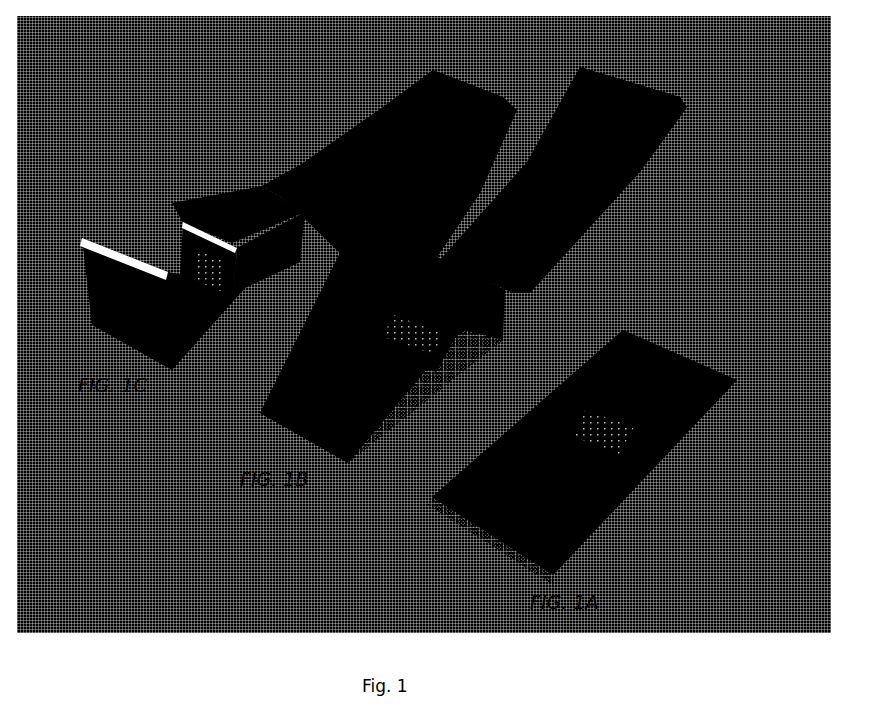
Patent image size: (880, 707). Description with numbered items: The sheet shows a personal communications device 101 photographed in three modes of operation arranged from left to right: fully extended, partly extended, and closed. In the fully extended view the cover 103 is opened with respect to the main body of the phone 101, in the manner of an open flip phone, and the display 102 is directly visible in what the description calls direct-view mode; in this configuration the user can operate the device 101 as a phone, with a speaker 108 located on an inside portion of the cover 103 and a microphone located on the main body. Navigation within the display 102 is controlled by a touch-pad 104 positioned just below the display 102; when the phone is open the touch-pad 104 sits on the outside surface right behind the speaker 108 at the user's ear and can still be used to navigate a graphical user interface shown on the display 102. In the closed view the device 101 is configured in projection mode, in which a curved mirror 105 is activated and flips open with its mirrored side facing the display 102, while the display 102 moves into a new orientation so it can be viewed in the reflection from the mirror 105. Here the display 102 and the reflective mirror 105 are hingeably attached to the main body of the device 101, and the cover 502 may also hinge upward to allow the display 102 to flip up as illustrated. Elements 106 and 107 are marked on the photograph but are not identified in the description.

In FIG. 1C, the personal communications device 101 is at (298, 160).
In FIG. 1B, the personal communications device 101 is at (388, 266).
In FIG. 1A, the personal communications device 101 is at (645, 173).
In FIG. 1C, the display 102 is at (172, 240).
In FIG. 1B, the display 102 is at (385, 303).
In FIG. 1A, the display 102 is at (575, 362).
In FIG. 1B, the cover 103 is at (480, 88).
In FIG. 1A, the cover 103 is at (672, 95).
In FIG. 1B, the touch-pad 104 is at (386, 101).
In FIG. 1A, the touch-pad 104 is at (668, 140).
In FIG. 1C, the curved mirror 105 is at (87, 283).
In FIG. 1B, the flexible portion 106 is at (372, 210).
In FIG. 1A, the flexible portion 106 is at (600, 227).
In FIG. 1C, the housing portion 107 is at (222, 203).
In FIG. 1B, the housing portion 107 is at (460, 383).
In FIG. 1B, the speaker 108 is at (462, 82).
In FIG. 1A, the speaker 108 is at (632, 83).
In FIG. 1C, the cover 502 is at (247, 186).